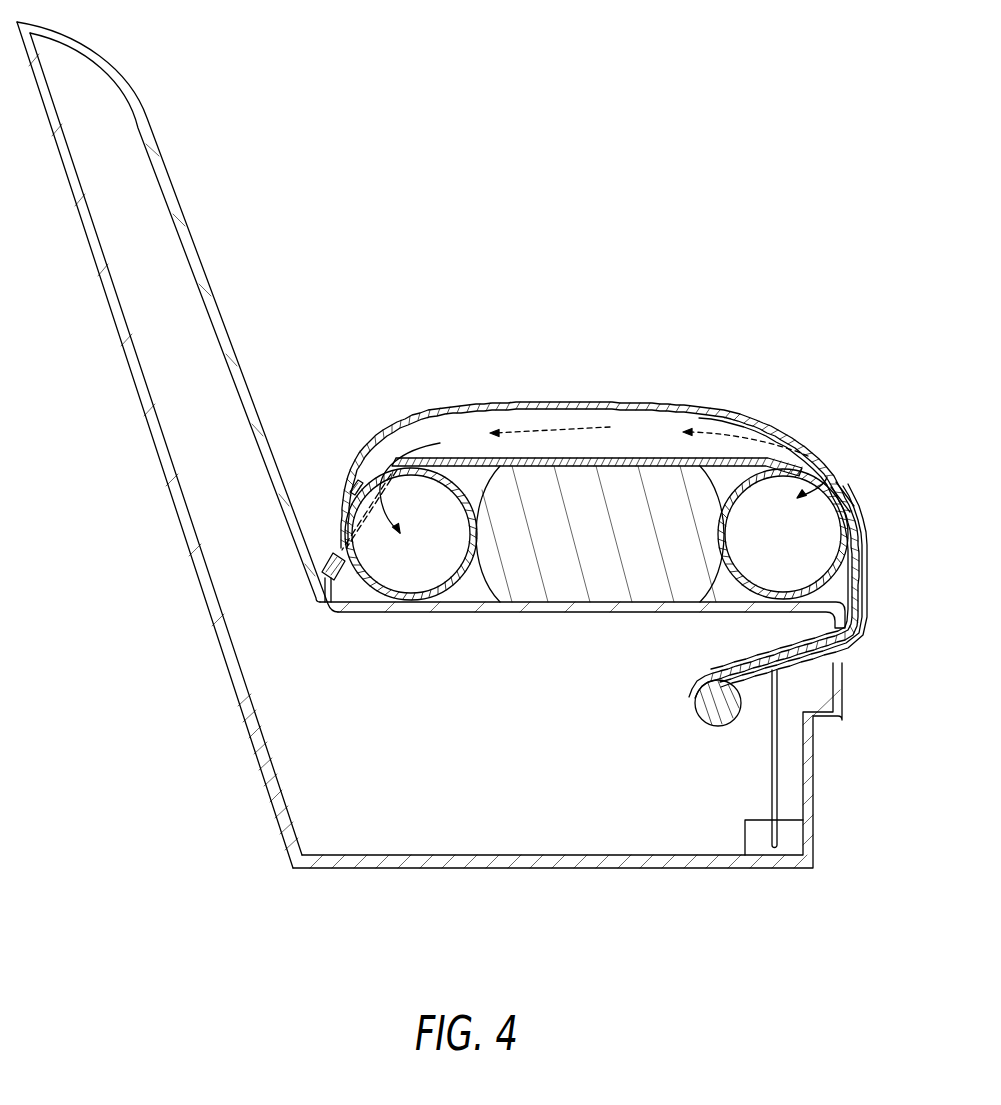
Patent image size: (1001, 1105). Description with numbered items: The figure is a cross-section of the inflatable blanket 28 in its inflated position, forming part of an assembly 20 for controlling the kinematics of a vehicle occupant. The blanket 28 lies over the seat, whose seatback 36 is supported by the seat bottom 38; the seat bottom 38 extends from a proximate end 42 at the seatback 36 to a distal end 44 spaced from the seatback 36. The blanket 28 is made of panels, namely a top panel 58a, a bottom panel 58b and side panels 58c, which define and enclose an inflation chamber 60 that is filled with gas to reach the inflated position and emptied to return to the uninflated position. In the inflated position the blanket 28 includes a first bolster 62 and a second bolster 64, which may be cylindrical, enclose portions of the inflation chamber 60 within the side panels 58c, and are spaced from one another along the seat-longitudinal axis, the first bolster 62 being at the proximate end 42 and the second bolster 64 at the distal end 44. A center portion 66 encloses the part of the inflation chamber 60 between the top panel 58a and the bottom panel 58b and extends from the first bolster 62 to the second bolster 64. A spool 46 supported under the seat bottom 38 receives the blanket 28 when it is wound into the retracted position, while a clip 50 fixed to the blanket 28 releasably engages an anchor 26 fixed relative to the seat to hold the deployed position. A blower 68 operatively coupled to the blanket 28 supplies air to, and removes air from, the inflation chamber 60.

The assembly 20 is at (850, 436).
The anchor 26 is at (340, 590).
The blanket 28 is at (692, 382).
The seatback 36 is at (207, 272).
The seat bottom 38 is at (578, 613).
The proximate end 42 is at (322, 613).
The distal end 44 is at (853, 600).
The spool 46 is at (710, 725).
The clip 50 is at (327, 557).
The top panel 58a is at (572, 403).
The bottom panel 58b is at (623, 457).
The side panels 58c is at (462, 586).
The inflation chamber 60 is at (469, 430).
The first bolster 62 is at (809, 529).
The second bolster 64 is at (429, 498).
The center portion 66 is at (717, 424).
The blower 68 is at (745, 832).